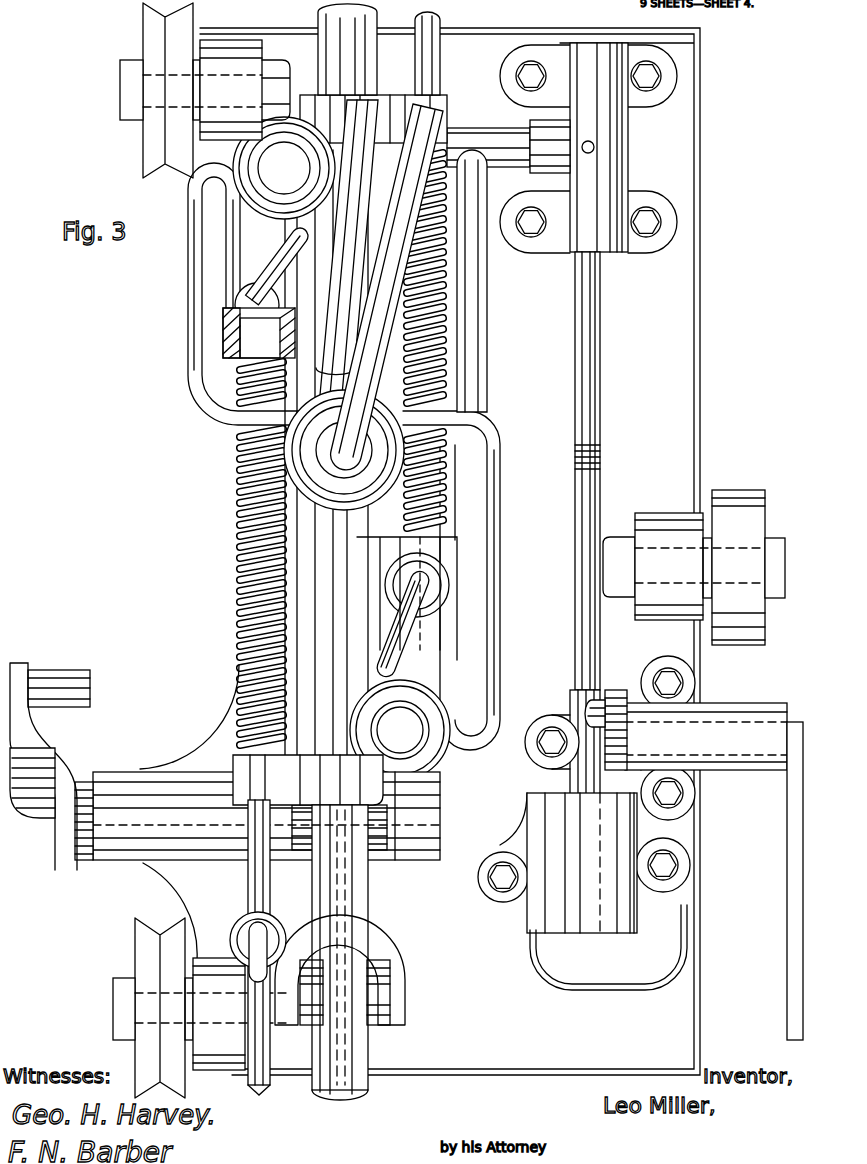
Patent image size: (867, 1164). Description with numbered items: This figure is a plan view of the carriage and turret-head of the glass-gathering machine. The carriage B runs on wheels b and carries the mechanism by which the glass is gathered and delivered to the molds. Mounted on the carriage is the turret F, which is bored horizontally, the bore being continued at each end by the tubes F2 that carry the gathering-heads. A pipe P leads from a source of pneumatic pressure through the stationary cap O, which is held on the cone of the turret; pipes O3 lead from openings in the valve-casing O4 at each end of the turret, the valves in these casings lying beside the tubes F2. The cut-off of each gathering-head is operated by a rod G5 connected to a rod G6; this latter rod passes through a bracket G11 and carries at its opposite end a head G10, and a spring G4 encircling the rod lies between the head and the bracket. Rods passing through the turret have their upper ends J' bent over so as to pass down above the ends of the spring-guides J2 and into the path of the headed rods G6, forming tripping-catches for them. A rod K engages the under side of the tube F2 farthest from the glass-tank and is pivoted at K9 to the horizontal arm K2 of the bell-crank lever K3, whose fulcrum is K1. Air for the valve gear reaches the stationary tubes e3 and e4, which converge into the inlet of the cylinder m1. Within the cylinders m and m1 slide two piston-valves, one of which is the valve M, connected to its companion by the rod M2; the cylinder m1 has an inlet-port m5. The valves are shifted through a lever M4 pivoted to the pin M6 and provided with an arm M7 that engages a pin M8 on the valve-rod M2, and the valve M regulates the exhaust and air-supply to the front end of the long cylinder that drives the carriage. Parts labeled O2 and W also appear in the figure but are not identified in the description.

The carriage B is at (672, 303).
The wheels b is at (143, 150).
The turret F is at (317, 592).
The tubes F2 is at (318, 17).
The spring G4 is at (252, 538).
The rod G5 is at (250, 1078).
The rod G6 is at (440, 62).
The head G10 is at (225, 333).
The bracket G11 is at (245, 795).
The pipe P is at (448, 112).
The stationary cap O is at (313, 448).
The pivot boss O2 is at (303, 290).
The pipes O3 is at (200, 318).
The valve-casing O4 is at (281, 145).
The bent upper ends of rods J' is at (355, 452).
The spring-guides J2 is at (250, 347).
The stationary tube e3 is at (498, 165).
The stationary tube e4 is at (483, 380).
The cylinder m is at (527, 810).
The cylinder m1 is at (602, 163).
The inlet-port m5 is at (565, 146).
The piston-valve M is at (540, 898).
The valve-rod M2 is at (580, 453).
The lever M4 is at (797, 950).
The pin M6 is at (745, 733).
The arm M7 is at (615, 747).
The pin M8 is at (595, 712).
The rod K is at (378, 848).
The fulcrum K1 is at (82, 845).
The horizontal arm K2 is at (395, 1015).
The bell-crank lever K3 is at (48, 763).
The pivot K9 is at (287, 845).
The wire loop W is at (637, 918).